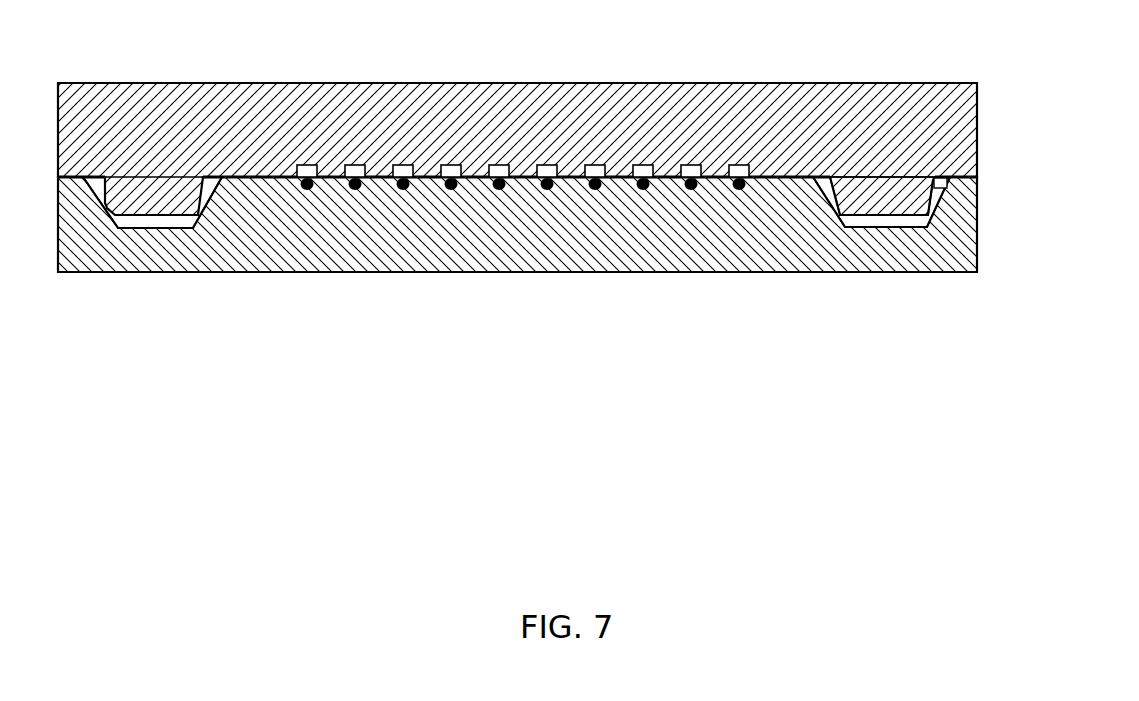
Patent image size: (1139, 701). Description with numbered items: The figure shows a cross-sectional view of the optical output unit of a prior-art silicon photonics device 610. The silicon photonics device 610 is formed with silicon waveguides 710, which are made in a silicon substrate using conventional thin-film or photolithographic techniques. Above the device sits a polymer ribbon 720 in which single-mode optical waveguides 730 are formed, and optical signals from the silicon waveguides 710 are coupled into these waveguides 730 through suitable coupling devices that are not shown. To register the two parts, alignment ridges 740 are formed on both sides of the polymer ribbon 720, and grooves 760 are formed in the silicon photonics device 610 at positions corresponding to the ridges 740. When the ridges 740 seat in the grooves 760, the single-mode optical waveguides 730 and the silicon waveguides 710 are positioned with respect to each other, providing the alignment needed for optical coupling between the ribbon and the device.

The silicon photonics device 610 is at (957, 250).
The silicon waveguides 710 is at (309, 190).
The polymer ribbon 720 is at (950, 127).
The waveguides 730 is at (352, 165).
The alignment ridges 740 is at (913, 200).
The grooves 760 is at (160, 228).